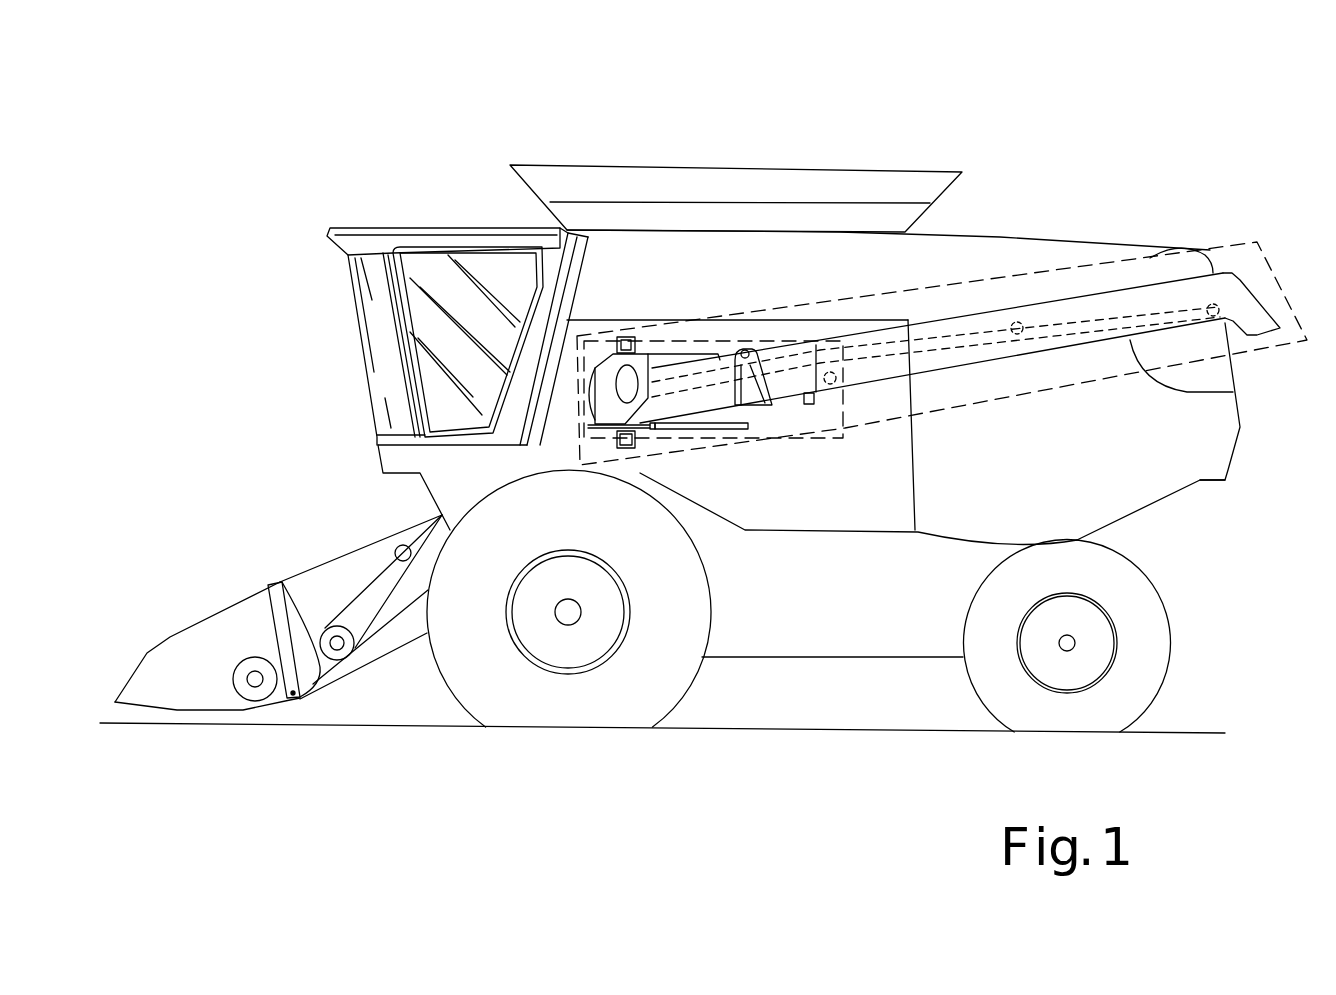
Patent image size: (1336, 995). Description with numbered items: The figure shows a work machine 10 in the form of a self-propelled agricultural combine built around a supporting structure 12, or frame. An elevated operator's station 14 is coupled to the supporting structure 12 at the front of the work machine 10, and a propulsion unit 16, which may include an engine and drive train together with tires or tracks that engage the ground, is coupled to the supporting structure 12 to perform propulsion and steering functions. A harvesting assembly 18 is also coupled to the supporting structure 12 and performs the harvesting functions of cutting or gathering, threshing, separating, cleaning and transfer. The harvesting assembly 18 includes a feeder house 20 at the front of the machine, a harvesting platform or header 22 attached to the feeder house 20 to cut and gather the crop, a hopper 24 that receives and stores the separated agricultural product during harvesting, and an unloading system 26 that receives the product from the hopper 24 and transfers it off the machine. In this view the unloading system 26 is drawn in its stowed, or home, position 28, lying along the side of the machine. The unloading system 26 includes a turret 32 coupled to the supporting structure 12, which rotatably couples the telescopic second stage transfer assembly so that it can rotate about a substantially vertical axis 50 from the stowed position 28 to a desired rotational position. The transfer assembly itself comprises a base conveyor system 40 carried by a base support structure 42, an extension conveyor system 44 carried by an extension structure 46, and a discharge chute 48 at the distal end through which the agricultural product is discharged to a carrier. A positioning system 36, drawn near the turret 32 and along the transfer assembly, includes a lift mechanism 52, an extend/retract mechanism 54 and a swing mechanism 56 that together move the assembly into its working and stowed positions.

The work machine 10 is at (377, 145).
The supporting structure 12 is at (844, 660).
The operator's station 14 is at (458, 322).
The propulsion unit 16 is at (430, 688).
The harvesting assembly 18 is at (1085, 215).
The feeder house 20 is at (335, 558).
The header 22 is at (217, 620).
The hopper 24 is at (737, 166).
The unloading system 26 is at (1220, 247).
The stowed position 28 is at (1047, 423).
The turret 32 is at (578, 392).
The positioning system 36 is at (803, 437).
The base conveyor system 40 is at (945, 332).
The base support structure 42 is at (773, 352).
The extension conveyor system 44 is at (1140, 313).
The extension structure 46 is at (1233, 392).
The discharge chute 48 is at (1250, 338).
The axis 50 is at (627, 337).
The lift mechanism 52 is at (692, 352).
The extend/retract mechanism 54 is at (820, 403).
The swing mechanism 56 is at (703, 437).